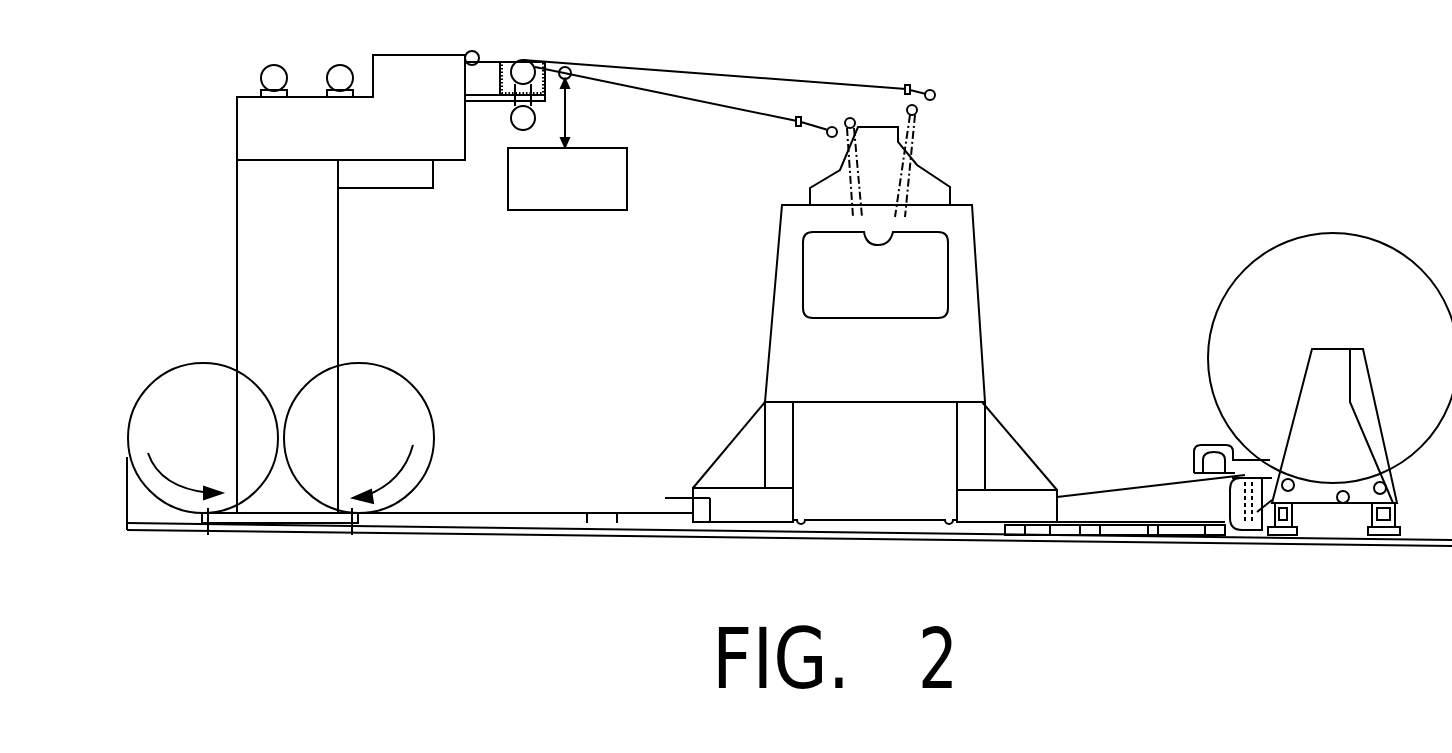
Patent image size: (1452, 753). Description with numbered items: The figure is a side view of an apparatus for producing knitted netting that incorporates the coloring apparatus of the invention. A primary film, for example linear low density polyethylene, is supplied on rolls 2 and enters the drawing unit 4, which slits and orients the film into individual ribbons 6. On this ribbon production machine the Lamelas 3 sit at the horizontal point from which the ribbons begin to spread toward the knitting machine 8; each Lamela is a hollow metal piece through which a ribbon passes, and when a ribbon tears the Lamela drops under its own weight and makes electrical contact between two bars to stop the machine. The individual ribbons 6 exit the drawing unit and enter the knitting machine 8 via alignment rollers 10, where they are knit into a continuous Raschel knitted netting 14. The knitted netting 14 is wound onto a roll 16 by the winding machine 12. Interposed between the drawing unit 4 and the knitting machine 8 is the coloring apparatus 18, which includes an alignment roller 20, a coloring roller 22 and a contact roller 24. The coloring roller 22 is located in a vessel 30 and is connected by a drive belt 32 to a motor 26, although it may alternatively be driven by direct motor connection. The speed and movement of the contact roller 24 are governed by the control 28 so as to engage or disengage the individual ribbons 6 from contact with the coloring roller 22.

The rolls 2 is at (183, 365).
The Lamelas 3 is at (798, 95).
The drawing unit 4 is at (237, 197).
The individual ribbons 6 is at (727, 80).
The knitting machine 8 is at (768, 343).
The alignment rollers 10 is at (828, 138).
The winding machine 12 is at (1398, 478).
The knitted netting 14 is at (1148, 488).
The roll 16 is at (1255, 263).
The coloring apparatus 18 is at (517, 45).
The alignment roller 20 is at (467, 52).
The coloring roller 22 is at (535, 62).
The contact roller 24 is at (572, 78).
The motor 26 is at (515, 127).
The control 28 is at (618, 206).
The vessel 30 is at (503, 75).
The drive belt 32 is at (508, 95).